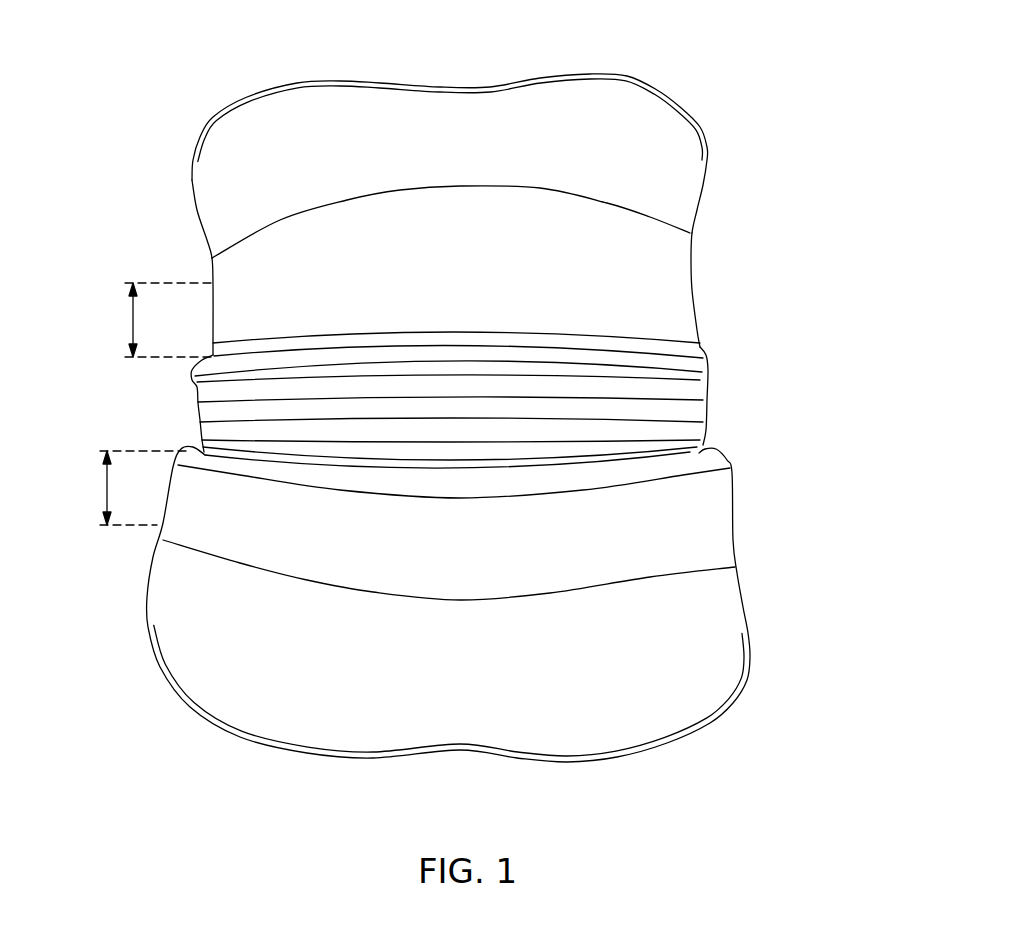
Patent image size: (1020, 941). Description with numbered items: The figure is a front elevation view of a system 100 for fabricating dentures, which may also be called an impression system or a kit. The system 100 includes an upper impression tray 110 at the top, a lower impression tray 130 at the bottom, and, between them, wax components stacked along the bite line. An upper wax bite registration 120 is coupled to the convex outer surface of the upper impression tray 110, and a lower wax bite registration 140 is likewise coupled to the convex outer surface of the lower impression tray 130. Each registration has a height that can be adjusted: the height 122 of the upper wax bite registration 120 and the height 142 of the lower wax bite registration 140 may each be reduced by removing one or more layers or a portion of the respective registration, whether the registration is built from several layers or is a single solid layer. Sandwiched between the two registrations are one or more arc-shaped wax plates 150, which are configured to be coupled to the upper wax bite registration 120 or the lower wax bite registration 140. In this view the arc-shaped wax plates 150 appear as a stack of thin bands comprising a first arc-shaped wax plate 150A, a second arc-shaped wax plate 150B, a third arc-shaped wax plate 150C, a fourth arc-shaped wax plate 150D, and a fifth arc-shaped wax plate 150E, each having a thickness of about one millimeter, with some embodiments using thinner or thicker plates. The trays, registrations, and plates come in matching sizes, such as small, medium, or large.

The system for fabricating dentures 100 is at (716, 46).
The upper impression tray 110 is at (683, 160).
The upper wax bite registration 120 is at (677, 297).
The height of the upper wax bite registration 122 is at (127, 320).
The lower impression tray 130 is at (732, 622).
The lower wax bite registration 140 is at (712, 503).
The height of the lower wax bite registration 142 is at (102, 488).
The arc-shaped wax plates 150 is at (512, 400).
The first arc-shaped wax plate 150A is at (710, 363).
The second arc-shaped wax plate 150B is at (707, 392).
The third arc-shaped wax plate 150C is at (693, 410).
The fourth arc-shaped wax plate 150D is at (690, 427).
The fifth arc-shaped wax plate 150E is at (709, 450).